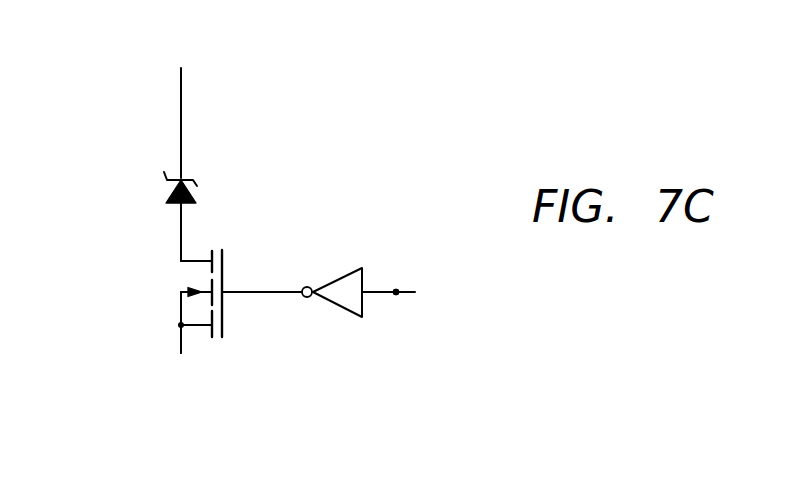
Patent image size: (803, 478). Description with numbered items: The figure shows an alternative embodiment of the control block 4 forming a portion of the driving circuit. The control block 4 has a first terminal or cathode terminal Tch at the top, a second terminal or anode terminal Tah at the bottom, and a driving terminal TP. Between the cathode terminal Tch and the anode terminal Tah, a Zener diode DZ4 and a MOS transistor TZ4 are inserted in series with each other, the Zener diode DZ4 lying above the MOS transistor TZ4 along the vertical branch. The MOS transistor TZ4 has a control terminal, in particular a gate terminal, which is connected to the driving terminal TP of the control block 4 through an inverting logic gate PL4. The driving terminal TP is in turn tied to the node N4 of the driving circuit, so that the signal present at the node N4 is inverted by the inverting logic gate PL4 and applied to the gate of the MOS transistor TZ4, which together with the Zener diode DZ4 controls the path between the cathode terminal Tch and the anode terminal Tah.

The control block 4 is at (142, 113).
The cathode terminal Tch is at (173, 106).
The Zener diode DZ4 is at (203, 215).
The MOS transistor TZ4 is at (174, 301).
The anode terminal Tah is at (176, 364).
The inverting logic gate PL4 is at (292, 313).
The node N4 is at (407, 302).
The driving terminal TP is at (398, 291).